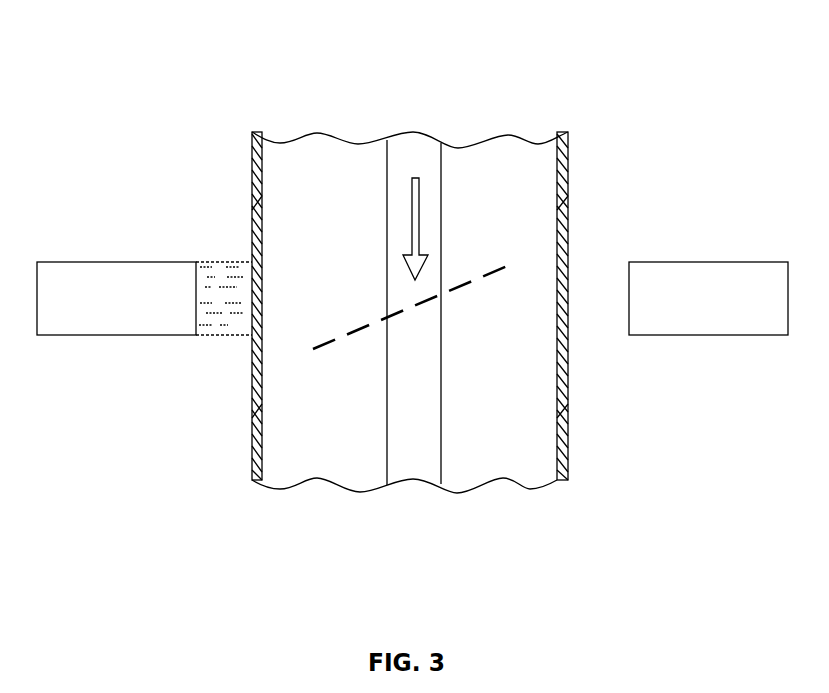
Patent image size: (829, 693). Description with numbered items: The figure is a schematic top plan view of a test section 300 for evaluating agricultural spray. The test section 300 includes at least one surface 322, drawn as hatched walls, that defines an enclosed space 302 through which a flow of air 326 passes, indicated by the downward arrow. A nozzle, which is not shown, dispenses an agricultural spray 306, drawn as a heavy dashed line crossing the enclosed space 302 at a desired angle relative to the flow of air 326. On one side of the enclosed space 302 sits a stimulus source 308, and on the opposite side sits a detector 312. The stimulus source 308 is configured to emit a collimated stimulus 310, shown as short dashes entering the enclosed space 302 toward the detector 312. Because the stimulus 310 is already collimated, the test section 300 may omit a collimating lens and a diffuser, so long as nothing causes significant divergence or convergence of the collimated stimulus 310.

The test section 300 is at (593, 72).
The enclosed space 302 is at (500, 173).
The agricultural spray 306 is at (497, 273).
The stimulus source 308 is at (117, 262).
The collimated stimulus 310 is at (222, 262).
The detector 312 is at (667, 262).
The surface 322 is at (568, 157).
The flow of air 326 is at (412, 209).